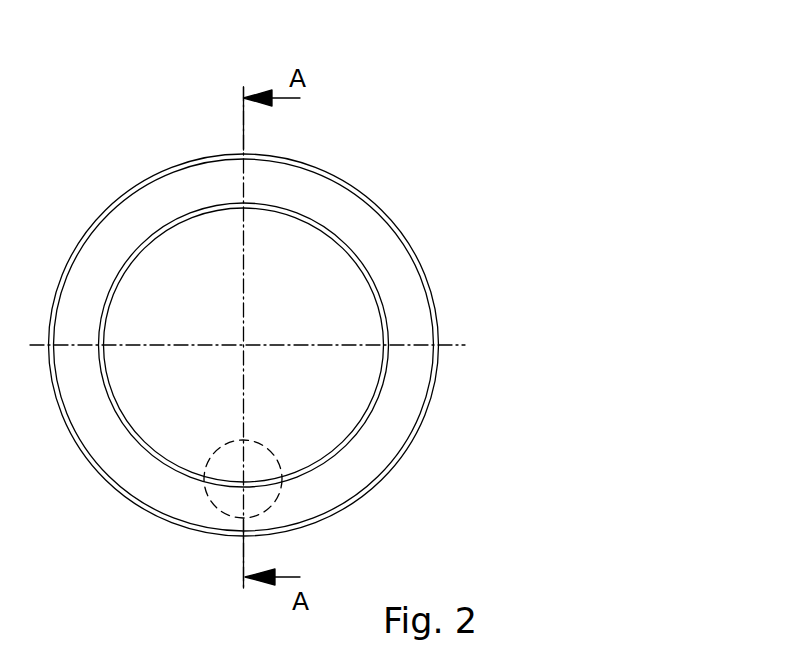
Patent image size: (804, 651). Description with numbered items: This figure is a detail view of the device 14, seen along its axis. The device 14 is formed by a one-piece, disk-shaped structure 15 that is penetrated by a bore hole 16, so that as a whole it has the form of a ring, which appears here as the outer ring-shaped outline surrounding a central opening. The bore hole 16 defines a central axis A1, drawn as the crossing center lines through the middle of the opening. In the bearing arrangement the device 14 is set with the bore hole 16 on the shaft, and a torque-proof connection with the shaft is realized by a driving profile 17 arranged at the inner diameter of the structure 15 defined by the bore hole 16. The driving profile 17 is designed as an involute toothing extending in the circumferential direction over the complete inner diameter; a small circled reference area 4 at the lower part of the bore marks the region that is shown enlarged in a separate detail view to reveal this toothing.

The reference area 4 is at (280, 495).
The device 14 is at (168, 140).
The disk-shaped structure 15 is at (132, 228).
The bore hole 16 is at (297, 277).
The driving profile 17 is at (202, 205).
The axis A1 is at (244, 345).